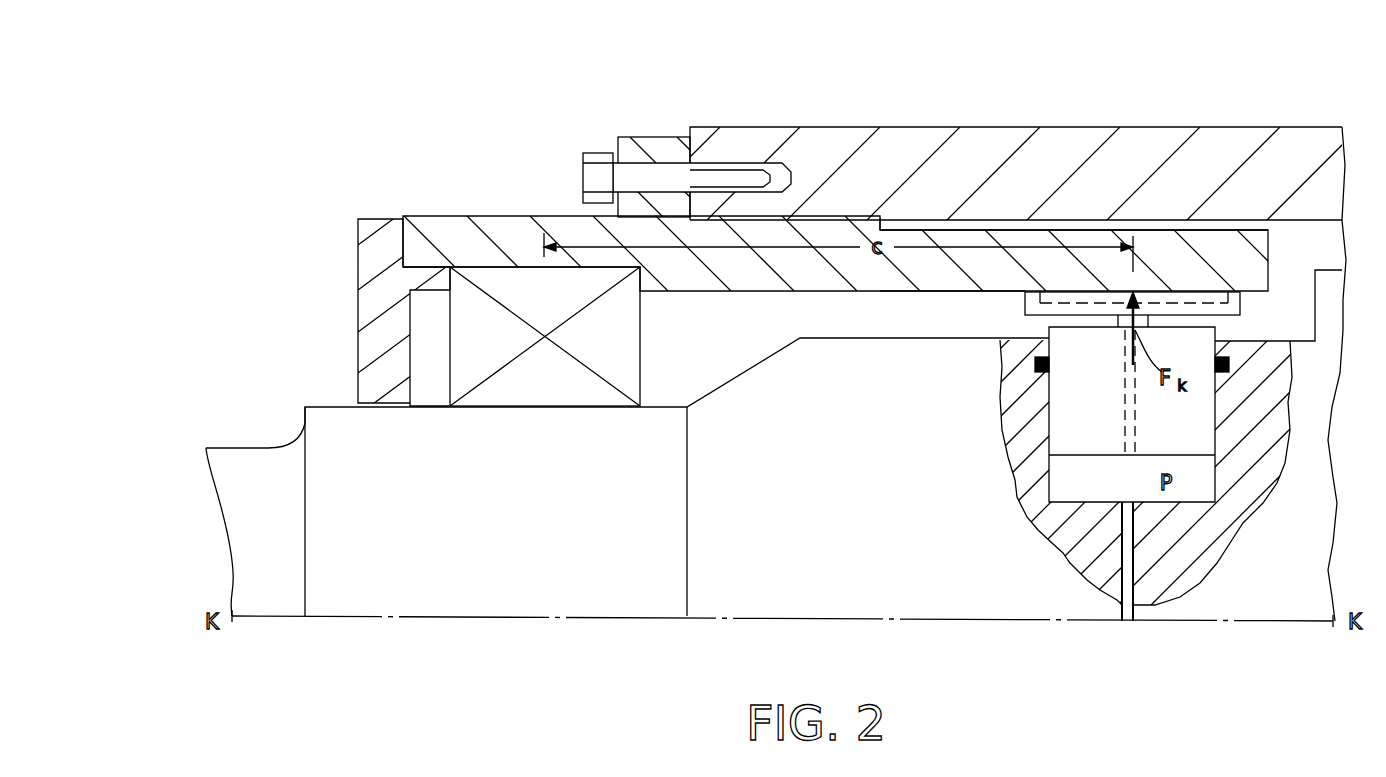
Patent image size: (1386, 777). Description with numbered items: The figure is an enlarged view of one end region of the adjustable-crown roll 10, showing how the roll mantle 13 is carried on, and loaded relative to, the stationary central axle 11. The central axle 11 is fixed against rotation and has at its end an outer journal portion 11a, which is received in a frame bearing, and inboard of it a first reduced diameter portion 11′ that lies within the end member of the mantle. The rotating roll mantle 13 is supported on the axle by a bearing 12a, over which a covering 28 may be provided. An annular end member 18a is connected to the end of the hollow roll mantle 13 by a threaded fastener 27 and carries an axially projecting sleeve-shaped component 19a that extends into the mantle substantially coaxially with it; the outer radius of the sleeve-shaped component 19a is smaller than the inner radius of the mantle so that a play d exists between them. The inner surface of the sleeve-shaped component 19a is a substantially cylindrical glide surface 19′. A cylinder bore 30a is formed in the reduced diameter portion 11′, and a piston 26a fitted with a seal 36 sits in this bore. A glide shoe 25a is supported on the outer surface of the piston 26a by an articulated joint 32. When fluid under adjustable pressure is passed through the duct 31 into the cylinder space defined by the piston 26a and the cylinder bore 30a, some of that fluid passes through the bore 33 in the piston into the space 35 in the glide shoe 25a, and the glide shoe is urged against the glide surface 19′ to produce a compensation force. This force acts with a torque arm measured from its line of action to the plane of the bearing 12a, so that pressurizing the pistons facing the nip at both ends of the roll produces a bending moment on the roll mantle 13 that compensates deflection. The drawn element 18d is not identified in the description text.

The adjustable-crown roll 10 is at (703, 320).
The stationary central axle 11 is at (1005, 605).
The outer journal portion 11a is at (283, 605).
The first reduced diameter portion 11′ is at (563, 605).
The bearing 12a is at (460, 350).
The roll mantle 13 is at (888, 143).
The annular end member 18a is at (657, 152).
The carrier plate 18d is at (488, 228).
The sleeve-shaped component 19a is at (915, 238).
The glide surface 19′ is at (960, 292).
The play d is at (996, 224).
The glide shoe 25a is at (1097, 307).
The piston 26a is at (1190, 435).
The threaded fastener 27 is at (595, 160).
The covering 28 is at (368, 312).
The cylinder bore 30a is at (1092, 490).
The duct 31 is at (1133, 600).
The articulated joint 32 is at (1118, 333).
The bore 33 is at (1133, 423).
The space 35 is at (1172, 295).
The seal 36 is at (1035, 365).